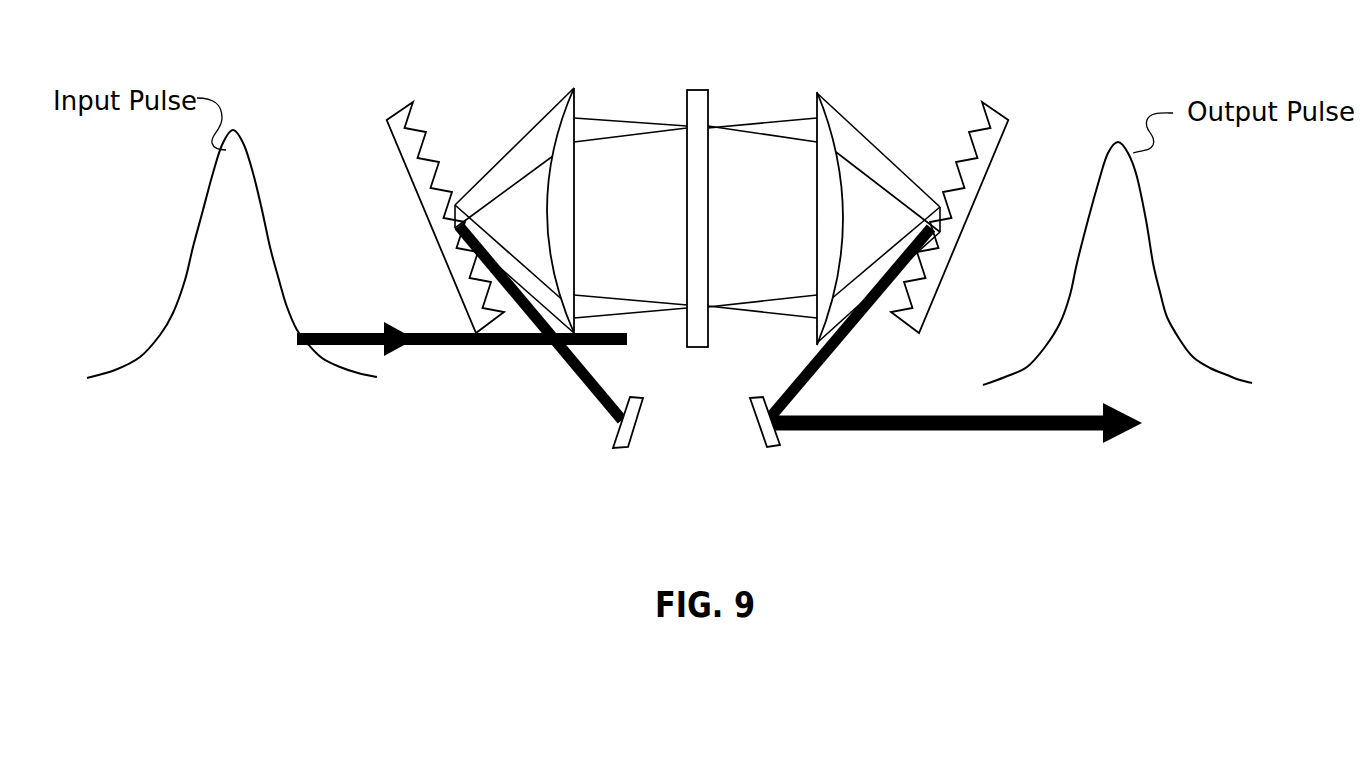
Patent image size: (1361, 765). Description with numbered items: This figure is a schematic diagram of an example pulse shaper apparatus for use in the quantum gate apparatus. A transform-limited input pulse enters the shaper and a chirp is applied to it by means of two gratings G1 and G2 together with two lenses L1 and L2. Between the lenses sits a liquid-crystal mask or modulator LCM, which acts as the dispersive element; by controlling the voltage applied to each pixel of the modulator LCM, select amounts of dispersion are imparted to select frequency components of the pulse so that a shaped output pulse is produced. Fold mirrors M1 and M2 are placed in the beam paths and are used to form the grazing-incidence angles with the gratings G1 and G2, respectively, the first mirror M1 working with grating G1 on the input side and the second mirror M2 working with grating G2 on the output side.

The grating G1 is at (409, 107).
The grating G2 is at (987, 107).
The lens L1 is at (571, 100).
The lens L2 is at (819, 103).
The liquid-crystal mask or modulator LCM is at (697, 90).
The fold mirror M1 is at (628, 448).
The fold mirror M2 is at (766, 448).